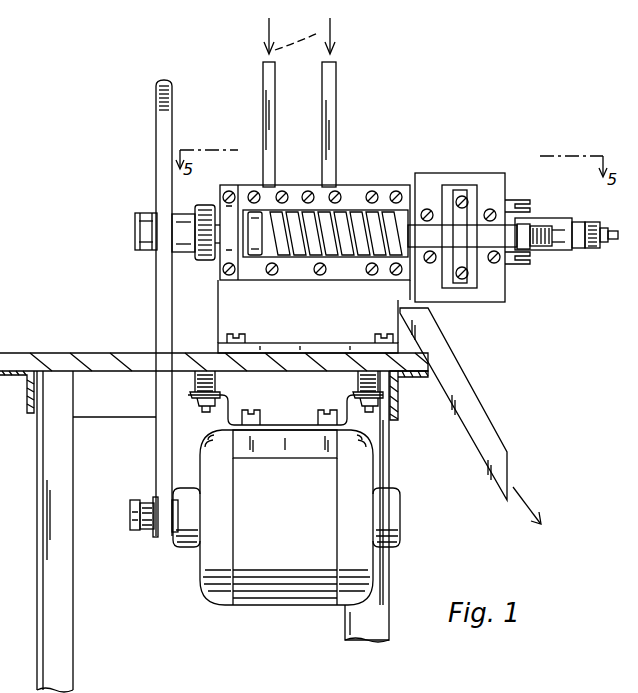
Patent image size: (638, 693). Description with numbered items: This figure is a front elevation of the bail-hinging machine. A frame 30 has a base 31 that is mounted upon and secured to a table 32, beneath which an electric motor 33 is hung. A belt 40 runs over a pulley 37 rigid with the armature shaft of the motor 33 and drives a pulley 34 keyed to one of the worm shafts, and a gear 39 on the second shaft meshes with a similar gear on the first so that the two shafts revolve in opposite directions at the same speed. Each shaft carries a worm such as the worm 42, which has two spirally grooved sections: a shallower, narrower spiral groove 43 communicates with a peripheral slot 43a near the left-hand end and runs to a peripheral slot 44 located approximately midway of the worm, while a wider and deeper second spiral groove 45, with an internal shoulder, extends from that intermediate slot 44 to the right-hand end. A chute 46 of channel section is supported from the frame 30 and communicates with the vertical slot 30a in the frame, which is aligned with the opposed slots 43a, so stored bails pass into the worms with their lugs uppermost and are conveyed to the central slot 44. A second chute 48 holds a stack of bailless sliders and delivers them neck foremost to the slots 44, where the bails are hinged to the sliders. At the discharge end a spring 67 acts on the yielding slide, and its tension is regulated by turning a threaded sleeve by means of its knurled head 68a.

The frame 30 is at (240, 283).
The vertical slot 30a is at (265, 210).
The base 31 is at (282, 347).
The table 32 is at (97, 352).
The electric motor 33 is at (285, 598).
The pulley 34 is at (153, 283).
The pulley 37 is at (150, 537).
The gear 39 is at (206, 260).
The belt 40 is at (156, 444).
The worm 42 is at (255, 257).
The spiral groove 43 is at (296, 258).
The peripheral slot 43a is at (276, 258).
The peripheral slot 44 is at (333, 190).
The second spiral groove 45 is at (359, 252).
The chute 46 is at (270, 140).
The second chute 48 is at (336, 112).
The spring 67 is at (535, 227).
The knurled head 68a is at (592, 250).